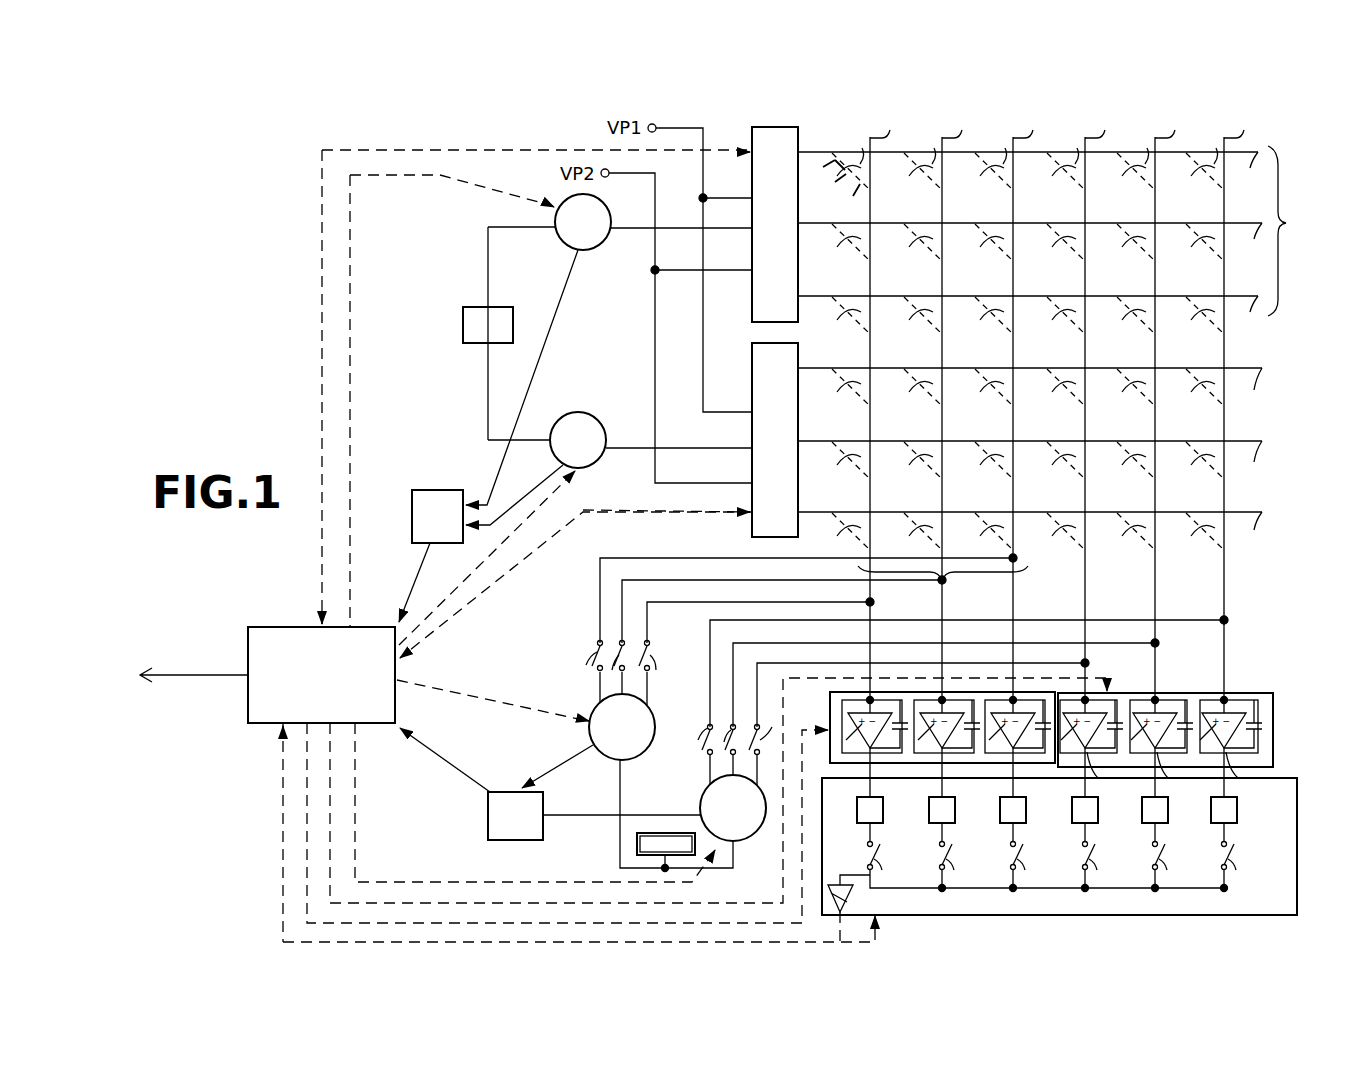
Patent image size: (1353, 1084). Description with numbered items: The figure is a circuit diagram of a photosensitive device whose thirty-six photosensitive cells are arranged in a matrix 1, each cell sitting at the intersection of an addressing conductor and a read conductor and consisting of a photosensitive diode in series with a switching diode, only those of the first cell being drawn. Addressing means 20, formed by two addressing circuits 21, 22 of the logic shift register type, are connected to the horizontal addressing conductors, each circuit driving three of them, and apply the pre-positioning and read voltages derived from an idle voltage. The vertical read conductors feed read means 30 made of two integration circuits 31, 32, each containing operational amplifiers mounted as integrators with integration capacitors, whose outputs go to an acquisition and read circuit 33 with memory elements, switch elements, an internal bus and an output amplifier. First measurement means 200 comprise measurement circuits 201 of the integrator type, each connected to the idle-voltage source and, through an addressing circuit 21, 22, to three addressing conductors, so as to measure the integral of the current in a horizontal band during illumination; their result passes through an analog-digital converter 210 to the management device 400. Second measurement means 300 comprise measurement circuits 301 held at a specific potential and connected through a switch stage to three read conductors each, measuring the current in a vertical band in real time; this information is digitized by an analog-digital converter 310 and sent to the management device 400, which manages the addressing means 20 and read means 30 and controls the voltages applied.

The matrix 1 is at (1305, 140).
The addressing means 20 is at (750, 126).
The addressing circuit 21 is at (789, 236).
The addressing circuit 22 is at (789, 451).
The read means 30 is at (1242, 690).
The integration circuit 31 is at (1275, 752).
The integration circuit 32 is at (830, 710).
The acquisition and read circuit 33 is at (1078, 918).
The first measurement means 200 is at (583, 258).
The measurement circuit 201 is at (603, 234).
The analog-digital converter 210 is at (455, 527).
The second measurement means 300 is at (697, 800).
The measurement circuit 301 is at (642, 739).
The analog-digital converter 310 is at (534, 827).
The management device 400 is at (338, 685).